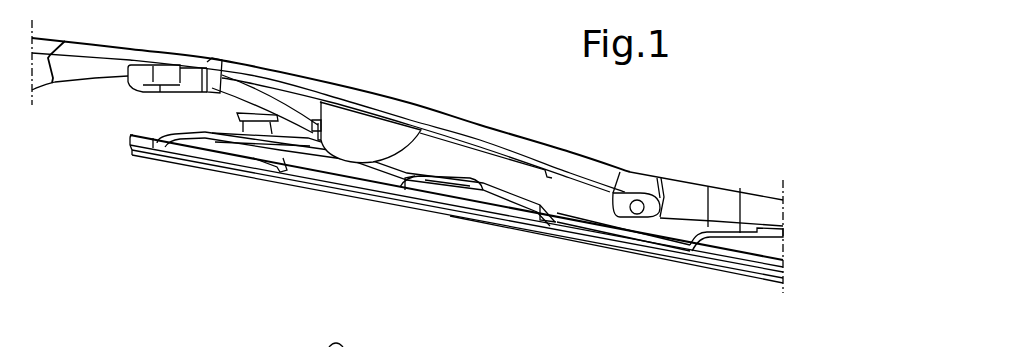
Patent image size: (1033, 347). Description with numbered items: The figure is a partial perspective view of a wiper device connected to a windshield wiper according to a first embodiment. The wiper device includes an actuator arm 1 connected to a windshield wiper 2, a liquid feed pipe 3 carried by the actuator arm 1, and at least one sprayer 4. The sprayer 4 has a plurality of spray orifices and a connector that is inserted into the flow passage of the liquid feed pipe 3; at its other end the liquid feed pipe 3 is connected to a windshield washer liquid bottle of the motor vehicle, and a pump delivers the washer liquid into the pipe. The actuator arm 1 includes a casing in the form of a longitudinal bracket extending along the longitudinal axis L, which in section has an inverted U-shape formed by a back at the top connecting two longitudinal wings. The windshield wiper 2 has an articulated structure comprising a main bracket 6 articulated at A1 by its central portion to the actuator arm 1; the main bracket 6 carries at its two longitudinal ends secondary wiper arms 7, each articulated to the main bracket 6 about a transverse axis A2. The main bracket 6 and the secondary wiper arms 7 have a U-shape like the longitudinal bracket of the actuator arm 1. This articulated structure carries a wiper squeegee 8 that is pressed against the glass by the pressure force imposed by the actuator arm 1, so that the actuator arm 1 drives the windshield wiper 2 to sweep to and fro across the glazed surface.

The actuator arm 1 is at (463, 123).
The windshield wiper 2 is at (572, 233).
The liquid feed pipe 3 is at (273, 108).
The sprayer 4 is at (365, 131).
The main bracket 6 is at (723, 213).
The secondary wiper arms 7 is at (176, 133).
The wiper squeegee 8 is at (428, 210).
The articulation of main bracket to actuator arm A1 is at (617, 203).
The transverse axis A2 is at (340, 160).
The longitudinal axis L is at (700, 285).